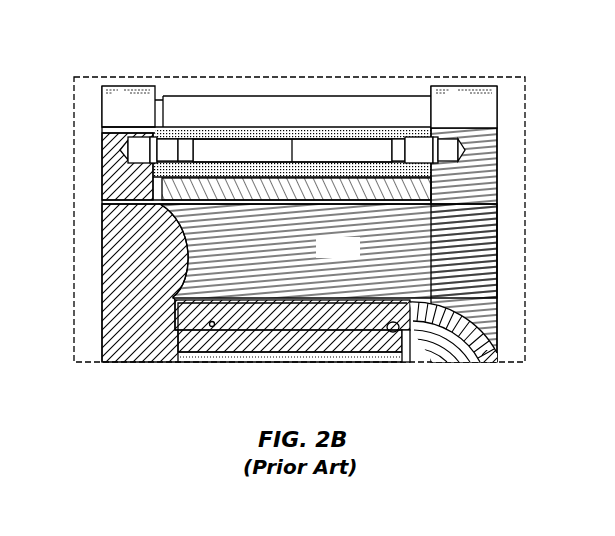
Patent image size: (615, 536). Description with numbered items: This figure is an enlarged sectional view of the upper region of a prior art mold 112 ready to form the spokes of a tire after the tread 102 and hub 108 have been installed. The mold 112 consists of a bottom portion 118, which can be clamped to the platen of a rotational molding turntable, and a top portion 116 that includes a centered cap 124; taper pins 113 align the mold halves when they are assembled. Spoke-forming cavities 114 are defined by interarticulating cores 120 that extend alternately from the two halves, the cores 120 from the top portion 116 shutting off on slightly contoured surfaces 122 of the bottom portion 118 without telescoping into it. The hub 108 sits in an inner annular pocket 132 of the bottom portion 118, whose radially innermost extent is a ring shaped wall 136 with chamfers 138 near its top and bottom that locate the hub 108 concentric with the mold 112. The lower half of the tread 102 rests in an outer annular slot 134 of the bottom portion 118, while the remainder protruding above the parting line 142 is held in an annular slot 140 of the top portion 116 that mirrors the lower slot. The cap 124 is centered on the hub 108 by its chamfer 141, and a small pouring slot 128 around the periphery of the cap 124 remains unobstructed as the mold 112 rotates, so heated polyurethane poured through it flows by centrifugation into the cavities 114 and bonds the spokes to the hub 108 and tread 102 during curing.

The tread 102 is at (437, 191).
The hub 108 is at (250, 318).
The mold 112 is at (466, 79).
The taper pins 113 is at (497, 135).
The cavities 114 is at (288, 316).
The top portion 116 is at (498, 163).
The bottom portion 118 is at (102, 230).
The cores 120 is at (328, 251).
The contoured surfaces 122 is at (157, 236).
The cap 124 is at (497, 352).
The pouring slot 128 is at (452, 303).
The inner annular pocket 132 is at (330, 330).
The outer annular slot 134 is at (200, 170).
The ring shaped wall 136 is at (218, 338).
The chamfers 138 is at (212, 323).
The annular slot 140 is at (337, 173).
The chamfer 141 is at (410, 302).
The parting line 142 is at (292, 143).